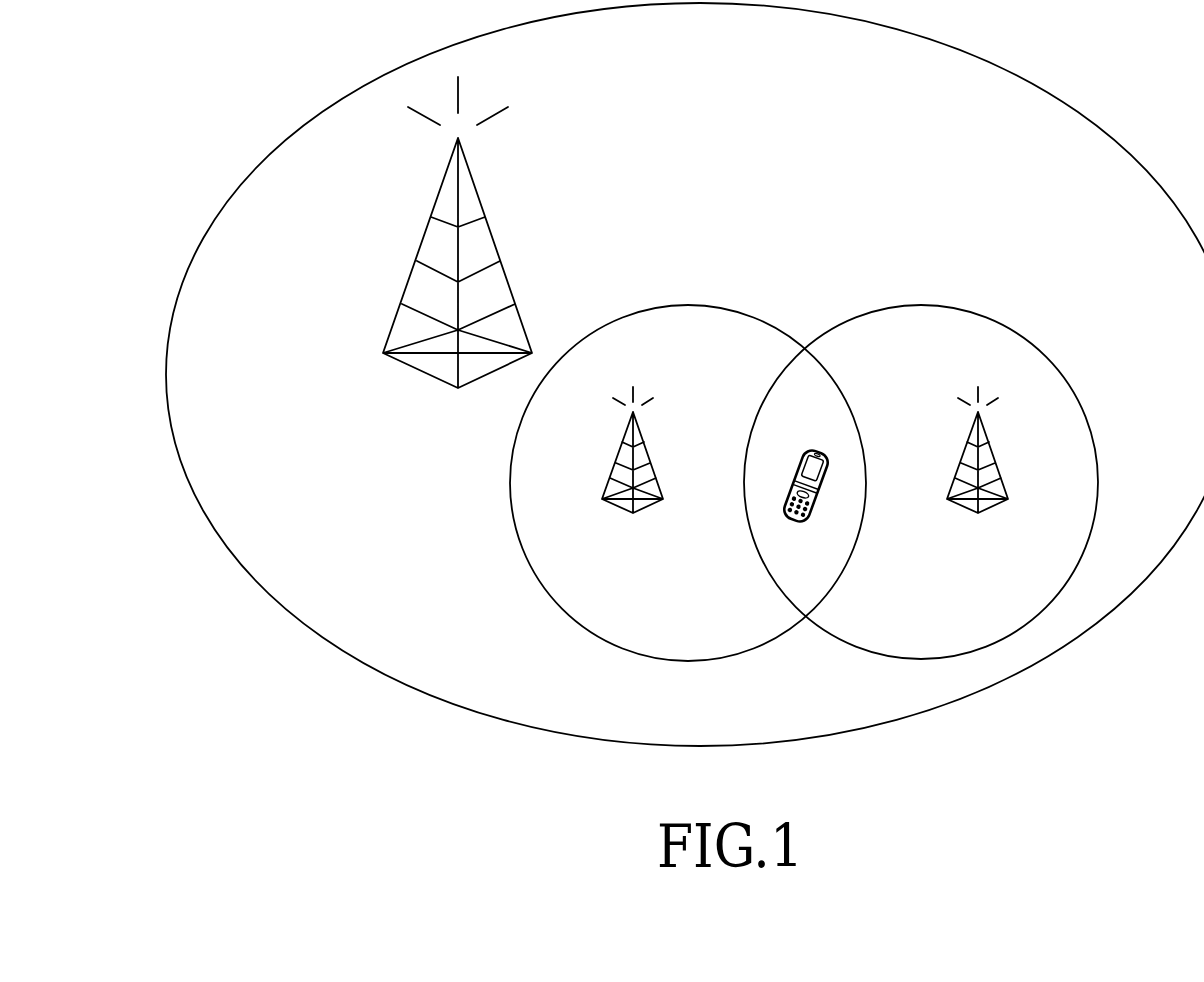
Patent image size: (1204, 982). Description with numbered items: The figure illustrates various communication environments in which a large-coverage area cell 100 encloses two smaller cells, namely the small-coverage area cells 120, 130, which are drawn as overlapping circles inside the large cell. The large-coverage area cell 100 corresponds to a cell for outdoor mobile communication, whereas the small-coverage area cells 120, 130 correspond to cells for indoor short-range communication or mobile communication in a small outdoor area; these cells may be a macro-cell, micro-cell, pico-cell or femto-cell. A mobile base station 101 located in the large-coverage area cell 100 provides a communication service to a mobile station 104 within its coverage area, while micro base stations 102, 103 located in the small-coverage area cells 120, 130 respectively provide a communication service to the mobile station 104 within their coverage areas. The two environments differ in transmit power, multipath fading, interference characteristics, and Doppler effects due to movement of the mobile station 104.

The large-coverage area cell 100 is at (685, 374).
The mobile base station 101 is at (472, 169).
The micro base station 102 is at (648, 454).
The micro base station 103 is at (993, 454).
The mobile station 104 is at (807, 449).
The small-coverage area cell 120 is at (688, 483).
The small-coverage area cell 130 is at (921, 482).